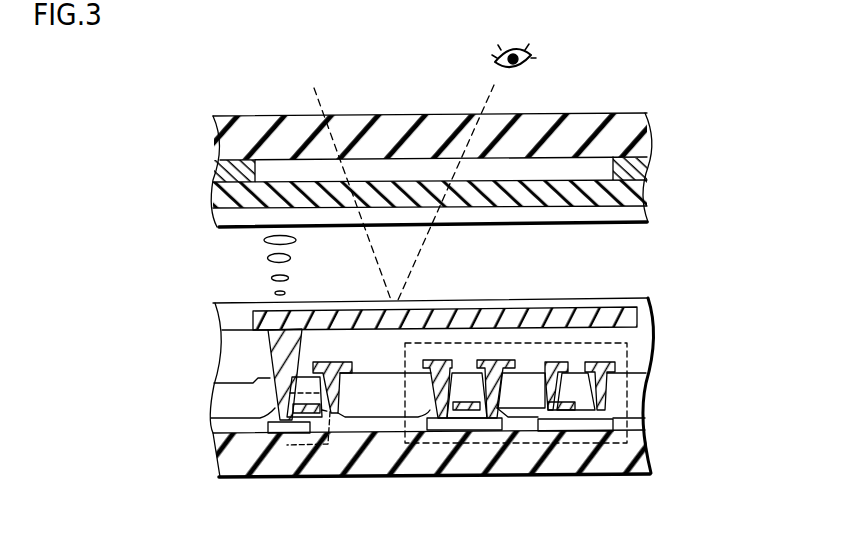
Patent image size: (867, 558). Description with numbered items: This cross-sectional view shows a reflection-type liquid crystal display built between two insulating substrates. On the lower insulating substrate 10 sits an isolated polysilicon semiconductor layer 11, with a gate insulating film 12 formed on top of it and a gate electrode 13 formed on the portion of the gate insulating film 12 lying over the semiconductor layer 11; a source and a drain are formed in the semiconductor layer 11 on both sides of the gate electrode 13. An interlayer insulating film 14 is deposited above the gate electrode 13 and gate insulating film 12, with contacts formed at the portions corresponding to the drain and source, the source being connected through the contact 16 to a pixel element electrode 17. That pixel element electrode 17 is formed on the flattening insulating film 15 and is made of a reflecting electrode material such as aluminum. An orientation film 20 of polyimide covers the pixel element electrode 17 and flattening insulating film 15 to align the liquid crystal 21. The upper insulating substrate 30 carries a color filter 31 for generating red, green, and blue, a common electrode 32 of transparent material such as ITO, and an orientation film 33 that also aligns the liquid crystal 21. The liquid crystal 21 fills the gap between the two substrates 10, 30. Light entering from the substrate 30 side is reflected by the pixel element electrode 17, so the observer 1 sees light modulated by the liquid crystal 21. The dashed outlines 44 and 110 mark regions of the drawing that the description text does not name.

The observer 1 is at (522, 50).
The insulating substrate 30 is at (650, 131).
The color filter 31 is at (582, 162).
The common electrode 32 is at (650, 191).
The orientation film 33 is at (650, 216).
The liquid crystal 21 is at (242, 267).
The orientation film 20 is at (570, 305).
The pixel element electrode 17 is at (603, 322).
The flattening insulating film 15 is at (652, 340).
The contact 16 is at (270, 349).
The interlayer insulating film 14 is at (646, 394).
The gate electrode 13 is at (309, 430).
The gate insulating film 12 is at (644, 423).
The polysilicon semiconductor layer 11 is at (294, 432).
The insulating substrate 10 is at (652, 460).
The semiconductor layer 44 is at (330, 446).
The driving circuit region 110 is at (533, 444).